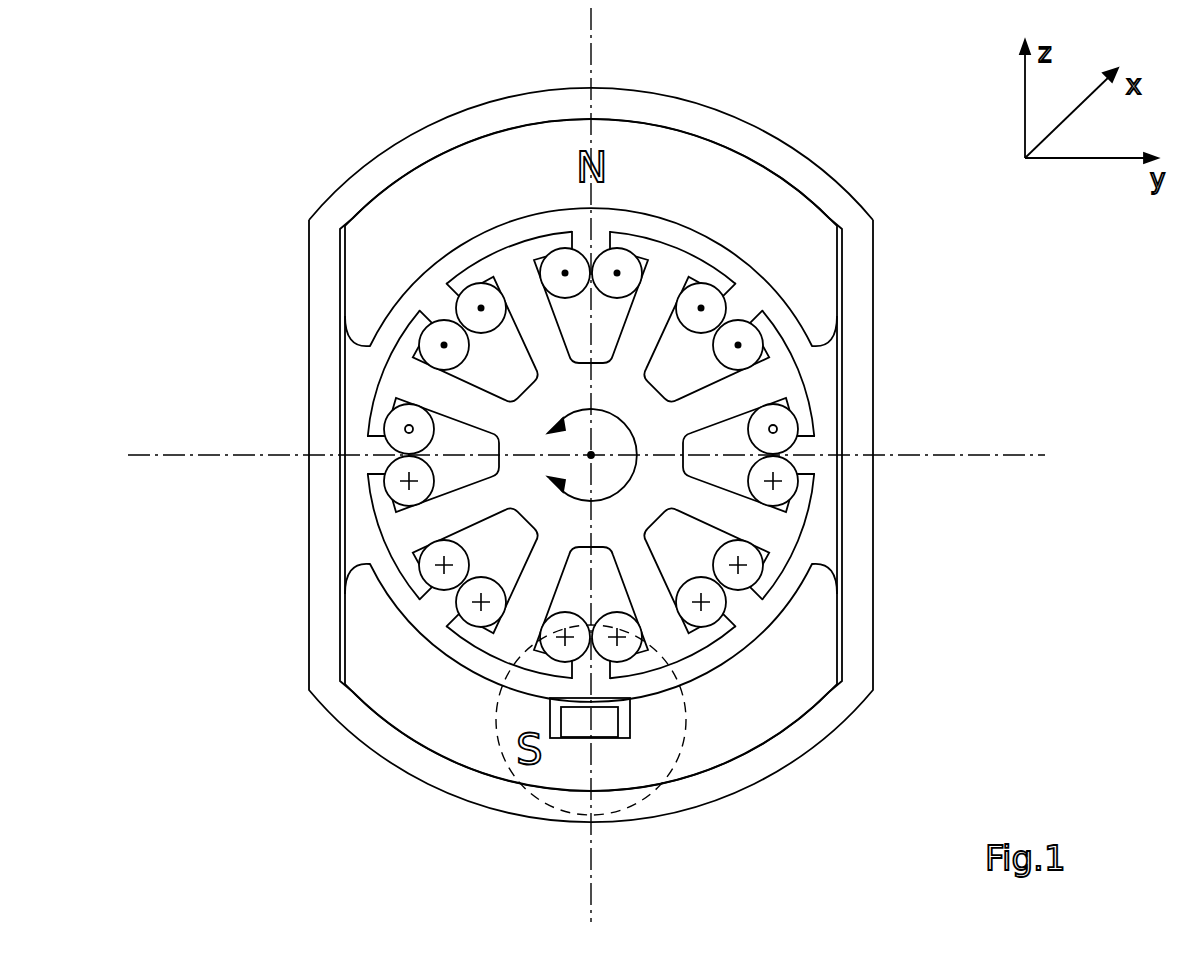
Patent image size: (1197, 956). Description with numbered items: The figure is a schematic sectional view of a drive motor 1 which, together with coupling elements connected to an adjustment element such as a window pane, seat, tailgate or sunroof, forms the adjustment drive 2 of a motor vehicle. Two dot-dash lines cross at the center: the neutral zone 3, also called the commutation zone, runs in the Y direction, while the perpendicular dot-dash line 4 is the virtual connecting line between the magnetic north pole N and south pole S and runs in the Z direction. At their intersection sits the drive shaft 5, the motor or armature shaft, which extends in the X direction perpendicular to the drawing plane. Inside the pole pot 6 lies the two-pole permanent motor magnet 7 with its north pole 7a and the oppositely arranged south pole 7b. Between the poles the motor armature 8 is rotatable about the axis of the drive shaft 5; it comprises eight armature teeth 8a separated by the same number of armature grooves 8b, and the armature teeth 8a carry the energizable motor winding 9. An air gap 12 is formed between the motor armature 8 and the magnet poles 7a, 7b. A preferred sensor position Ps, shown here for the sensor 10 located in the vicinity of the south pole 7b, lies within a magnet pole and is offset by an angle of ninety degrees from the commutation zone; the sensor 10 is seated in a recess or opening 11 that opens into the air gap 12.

The drive motor 1 is at (875, 255).
The adjustment drive 2 is at (826, 121).
The neutral zone 3 is at (948, 455).
The dot-dash line 4 is at (598, 50).
The drive shaft 5 is at (589, 455).
The pole pot 6 is at (716, 117).
The motor magnet 7 is at (836, 630).
The north pole 7a is at (508, 148).
The south pole 7b is at (752, 730).
The motor armature 8 is at (812, 517).
The armature teeth 8a is at (383, 525).
The armature grooves 8b is at (420, 618).
The motor winding 9 is at (393, 480).
The sensor 10 is at (572, 738).
The recess or opening 11 is at (623, 738).
The air gap 12 is at (432, 298).
The sensor position Ps is at (648, 800).